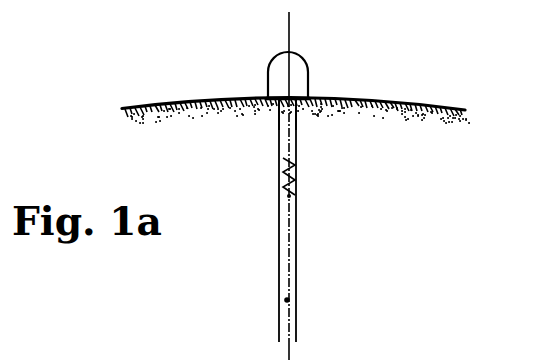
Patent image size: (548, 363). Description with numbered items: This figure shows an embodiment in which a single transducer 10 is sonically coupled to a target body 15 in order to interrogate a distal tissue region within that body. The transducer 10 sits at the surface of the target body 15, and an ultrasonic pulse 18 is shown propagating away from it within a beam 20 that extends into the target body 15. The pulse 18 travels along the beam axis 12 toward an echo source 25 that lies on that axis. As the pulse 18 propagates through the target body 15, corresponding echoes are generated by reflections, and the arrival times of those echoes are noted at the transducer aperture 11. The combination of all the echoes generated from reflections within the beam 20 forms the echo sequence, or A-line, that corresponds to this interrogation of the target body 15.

The transducer 10 is at (306, 80).
The transducer aperture 11 is at (293, 110).
The beam axis 12 is at (289, 33).
The target body 15 is at (415, 163).
The ultrasonic pulse 18 is at (295, 193).
The beam 20 is at (297, 240).
The echo source 25 is at (287, 300).